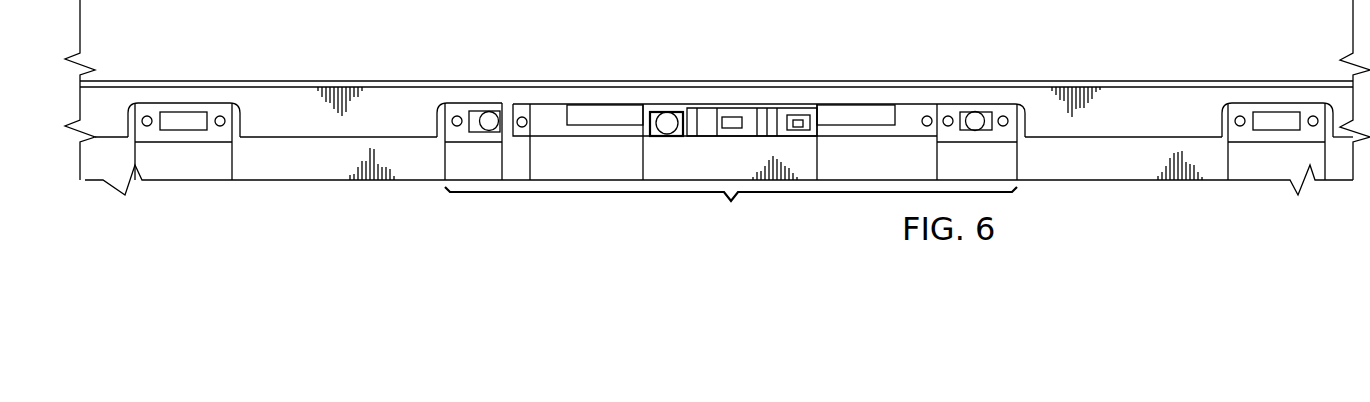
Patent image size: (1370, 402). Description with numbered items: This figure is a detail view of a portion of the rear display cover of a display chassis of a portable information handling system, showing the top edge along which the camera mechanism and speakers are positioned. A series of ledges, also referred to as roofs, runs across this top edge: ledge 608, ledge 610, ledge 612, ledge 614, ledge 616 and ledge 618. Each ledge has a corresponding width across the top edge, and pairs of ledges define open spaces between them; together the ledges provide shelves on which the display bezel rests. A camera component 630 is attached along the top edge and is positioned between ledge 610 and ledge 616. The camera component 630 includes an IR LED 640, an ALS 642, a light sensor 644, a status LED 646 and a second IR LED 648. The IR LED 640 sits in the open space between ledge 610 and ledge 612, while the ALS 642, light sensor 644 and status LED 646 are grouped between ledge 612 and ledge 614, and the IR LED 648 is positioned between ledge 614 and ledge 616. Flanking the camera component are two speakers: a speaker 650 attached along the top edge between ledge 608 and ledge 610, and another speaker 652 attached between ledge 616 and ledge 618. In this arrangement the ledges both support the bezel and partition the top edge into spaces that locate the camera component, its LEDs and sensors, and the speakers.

The ledge 608 is at (113, 137).
The ledge 610 is at (305, 137).
The ledge 612 is at (592, 110).
The ledge 614 is at (878, 110).
The ledge 616 is at (1112, 138).
The ledge 618 is at (1337, 137).
The camera component 630 is at (735, 130).
The IR LED 640 is at (463, 110).
The ALS 642 is at (667, 112).
The light sensor 644 is at (745, 112).
The status LED 646 is at (813, 112).
The IR LED 648 is at (997, 108).
The speaker 650 is at (218, 102).
The speaker 652 is at (1247, 112).